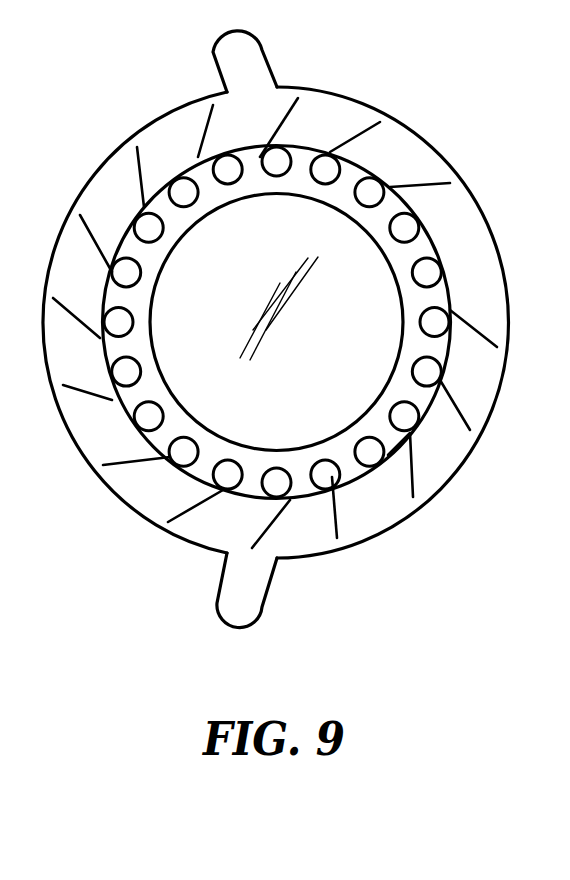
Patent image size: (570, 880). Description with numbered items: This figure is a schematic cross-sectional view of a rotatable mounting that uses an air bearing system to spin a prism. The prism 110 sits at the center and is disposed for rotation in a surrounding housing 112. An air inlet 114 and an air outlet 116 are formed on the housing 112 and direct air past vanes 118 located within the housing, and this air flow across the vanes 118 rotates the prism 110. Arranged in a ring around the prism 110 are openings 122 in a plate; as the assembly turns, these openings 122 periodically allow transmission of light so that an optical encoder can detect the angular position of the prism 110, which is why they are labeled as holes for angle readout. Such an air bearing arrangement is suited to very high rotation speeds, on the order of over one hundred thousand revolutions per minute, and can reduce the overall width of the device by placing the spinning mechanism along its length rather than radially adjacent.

The prism 110 is at (260, 267).
The housing 112 is at (453, 168).
The air inlet 114 is at (238, 605).
The air outlet 116 is at (227, 30).
The vanes 118 is at (305, 104).
The openings 122 is at (328, 478).